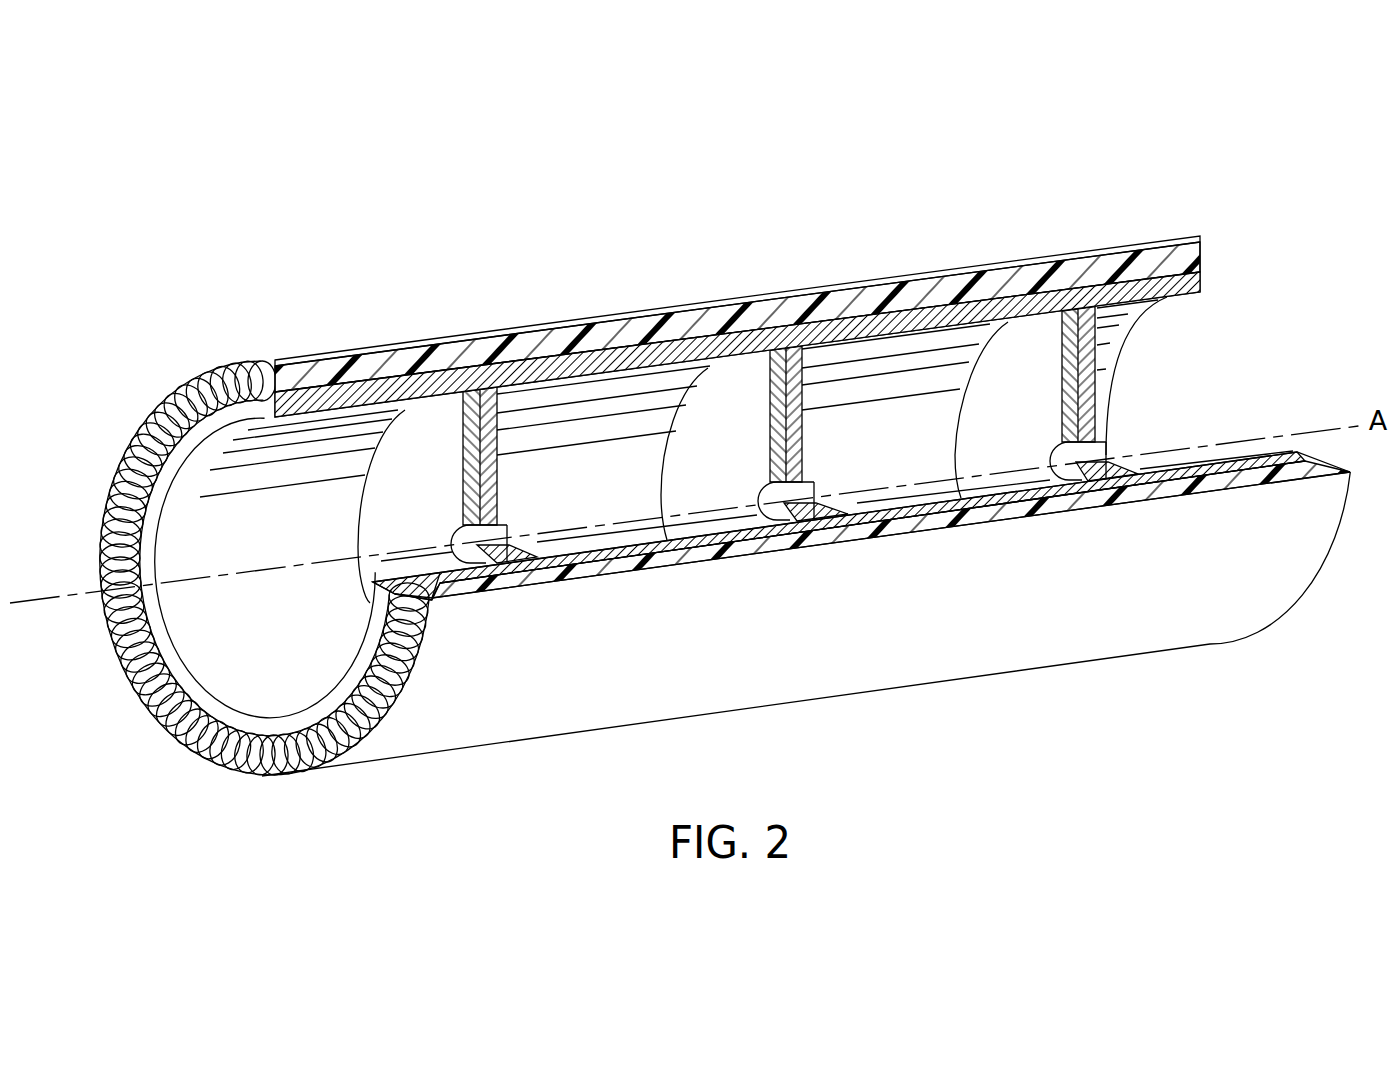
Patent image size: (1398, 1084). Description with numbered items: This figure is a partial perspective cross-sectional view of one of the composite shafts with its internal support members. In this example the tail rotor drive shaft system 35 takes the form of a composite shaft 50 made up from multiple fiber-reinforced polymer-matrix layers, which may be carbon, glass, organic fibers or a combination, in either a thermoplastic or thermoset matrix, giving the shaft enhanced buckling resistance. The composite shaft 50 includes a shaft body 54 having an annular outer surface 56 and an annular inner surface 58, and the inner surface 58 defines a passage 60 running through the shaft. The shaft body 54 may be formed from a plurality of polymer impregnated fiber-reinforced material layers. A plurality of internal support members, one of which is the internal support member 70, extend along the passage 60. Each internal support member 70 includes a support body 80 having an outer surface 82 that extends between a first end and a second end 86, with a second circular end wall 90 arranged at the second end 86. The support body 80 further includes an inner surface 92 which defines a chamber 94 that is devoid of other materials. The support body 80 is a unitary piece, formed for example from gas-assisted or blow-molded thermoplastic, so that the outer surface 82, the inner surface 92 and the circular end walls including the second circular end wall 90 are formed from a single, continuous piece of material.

The tail rotor drive shaft system 35 is at (118, 395).
The composite shaft 50 is at (360, 245).
The shaft body 54 is at (618, 314).
The annular outer surface 56 is at (777, 293).
The annular inner surface 58 is at (150, 497).
The passage 60 is at (210, 637).
The internal support member 70 is at (1125, 327).
The support body 80 is at (358, 418).
The outer surface 82 is at (338, 400).
The second end 86 is at (453, 388).
The second circular end wall 90 is at (436, 603).
The inner surface 92 is at (330, 692).
The chamber 94 is at (235, 545).